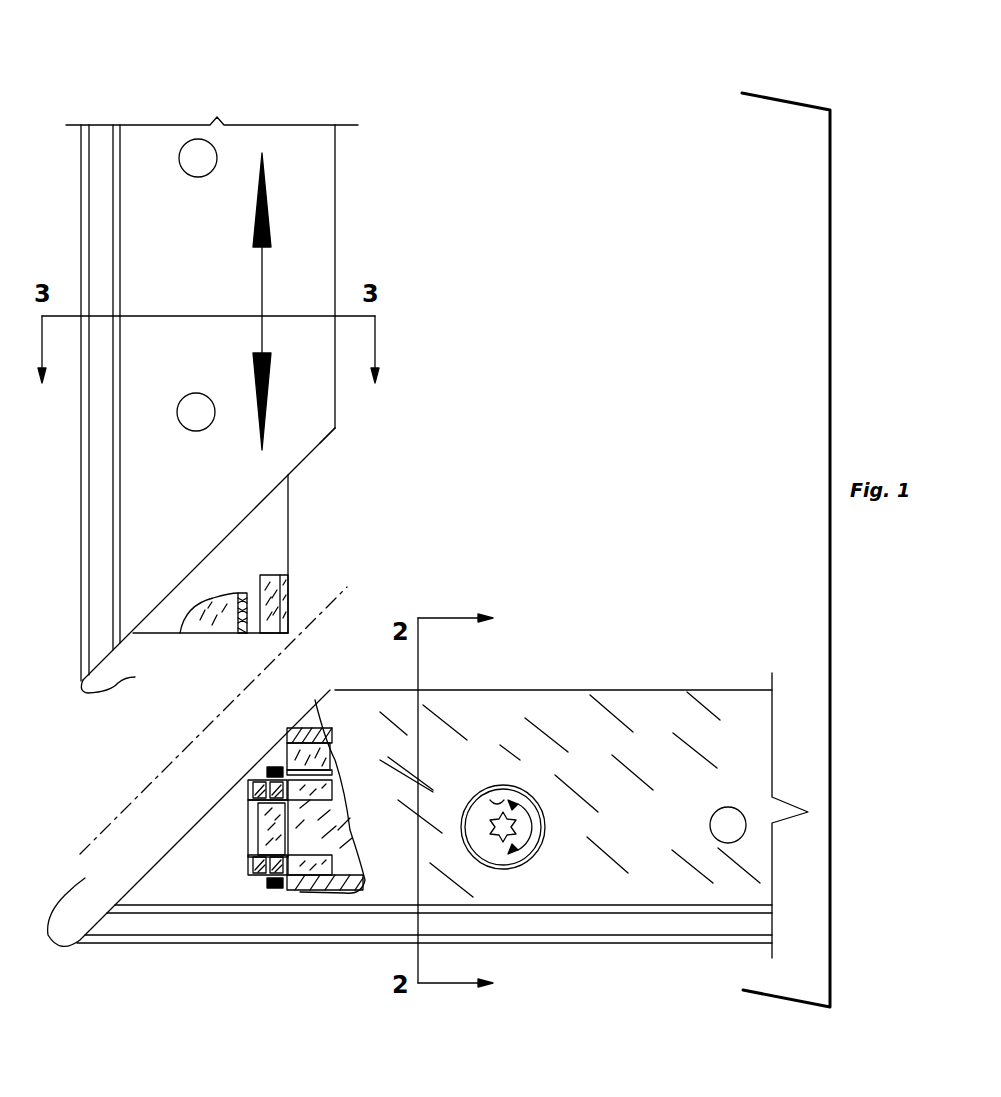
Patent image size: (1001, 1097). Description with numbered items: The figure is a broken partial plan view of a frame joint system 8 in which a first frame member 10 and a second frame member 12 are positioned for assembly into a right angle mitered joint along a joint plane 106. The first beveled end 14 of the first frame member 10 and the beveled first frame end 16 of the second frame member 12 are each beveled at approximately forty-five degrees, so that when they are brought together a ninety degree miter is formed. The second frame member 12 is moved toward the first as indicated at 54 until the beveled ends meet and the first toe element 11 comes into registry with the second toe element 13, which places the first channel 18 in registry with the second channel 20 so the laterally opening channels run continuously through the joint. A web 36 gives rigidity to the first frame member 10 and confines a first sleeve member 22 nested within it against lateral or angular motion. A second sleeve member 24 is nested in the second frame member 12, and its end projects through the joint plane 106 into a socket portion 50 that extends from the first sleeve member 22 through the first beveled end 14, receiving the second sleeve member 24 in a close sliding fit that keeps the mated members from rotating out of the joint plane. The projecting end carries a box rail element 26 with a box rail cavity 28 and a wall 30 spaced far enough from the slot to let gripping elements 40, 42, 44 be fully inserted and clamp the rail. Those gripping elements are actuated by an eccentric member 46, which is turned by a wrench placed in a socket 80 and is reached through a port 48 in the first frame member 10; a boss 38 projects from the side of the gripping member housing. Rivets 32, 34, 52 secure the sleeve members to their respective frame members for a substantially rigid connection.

The frame joint system 8 is at (668, 305).
The first frame member 10 is at (630, 690).
The first toe element 11 is at (189, 818).
The second frame member 12 is at (335, 195).
The second toe element 13 is at (121, 680).
The first beveled end 14 is at (315, 700).
The beveled first frame end 16 is at (332, 437).
The first channel 18 is at (685, 920).
The second channel 20 is at (98, 258).
The first sleeve member 22 is at (288, 770).
The second sleeve member 24 is at (288, 526).
The box rail element 26 is at (262, 625).
The box rail cavity 28 is at (275, 623).
The wall 30 is at (247, 593).
The rivet 32 is at (213, 428).
The rivet 34 is at (217, 153).
The web 36 is at (321, 727).
The boss 38 is at (263, 783).
The gripping element 40 is at (248, 788).
The gripping element 42 is at (250, 862).
The gripping element 44 is at (248, 818).
The eccentric member 46 is at (503, 855).
The port 48 is at (497, 797).
The socket portion 50 is at (229, 852).
The rivet 52 is at (728, 807).
The direction of movement 54 is at (262, 270).
The socket 80 is at (487, 827).
The joint plane 106 is at (323, 613).